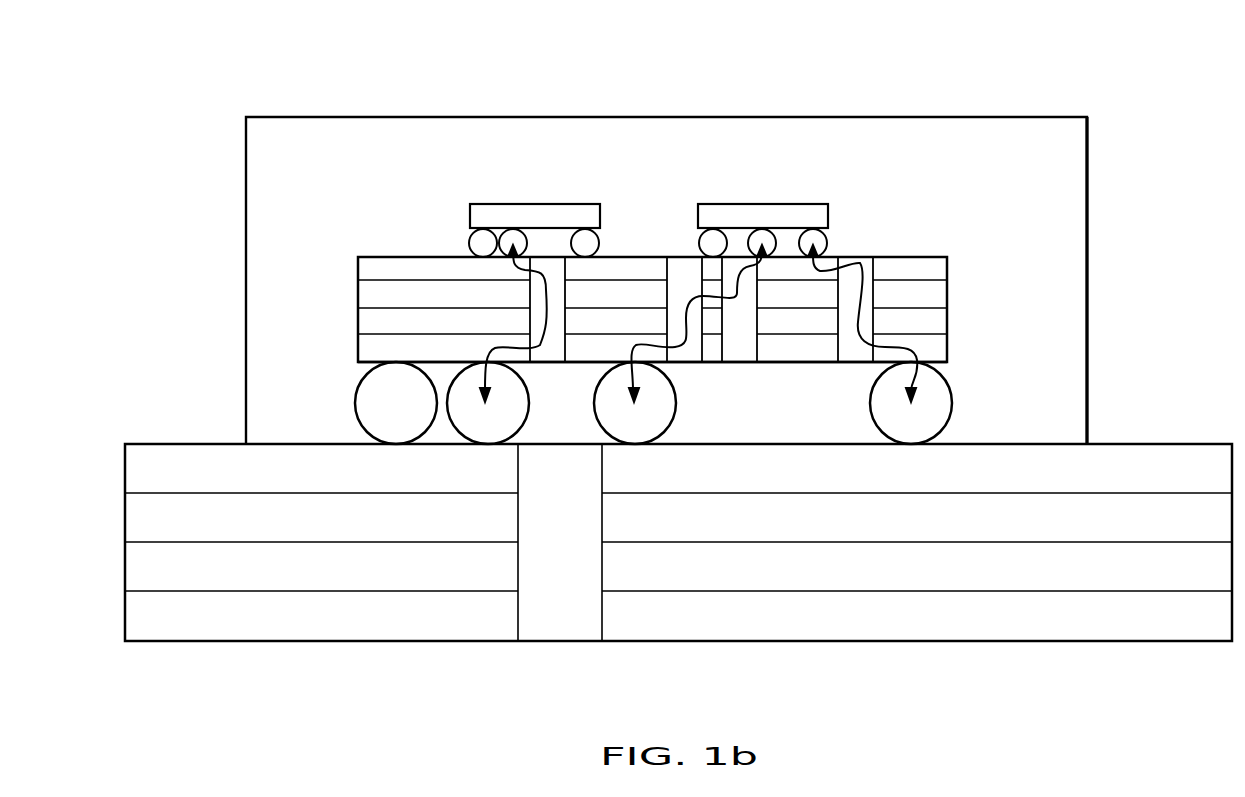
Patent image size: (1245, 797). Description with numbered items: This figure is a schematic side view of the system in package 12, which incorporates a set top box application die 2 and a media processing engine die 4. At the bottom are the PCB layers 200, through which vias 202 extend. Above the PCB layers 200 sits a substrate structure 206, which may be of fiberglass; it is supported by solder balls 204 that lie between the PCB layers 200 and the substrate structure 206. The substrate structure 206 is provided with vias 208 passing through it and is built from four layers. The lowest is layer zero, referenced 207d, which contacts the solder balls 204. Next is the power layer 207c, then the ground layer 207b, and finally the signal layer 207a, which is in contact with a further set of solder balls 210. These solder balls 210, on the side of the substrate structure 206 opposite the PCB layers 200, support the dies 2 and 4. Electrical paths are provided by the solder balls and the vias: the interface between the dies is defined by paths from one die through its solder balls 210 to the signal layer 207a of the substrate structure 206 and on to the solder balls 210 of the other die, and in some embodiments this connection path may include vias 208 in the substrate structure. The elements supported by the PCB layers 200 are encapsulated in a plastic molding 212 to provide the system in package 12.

The system in package 12 is at (283, 117).
The plastic molding 212 is at (1090, 130).
The media processing engine die 4 is at (492, 204).
The set top box application die 2 is at (720, 204).
The solder balls 210 is at (698, 243).
The vias 208 is at (865, 270).
The substrate structure 206 is at (919, 262).
The signal layer 207a is at (948, 267).
The ground layer 207b is at (948, 293).
The power layer 207c is at (948, 320).
The layer 0 207d is at (948, 347).
The solder balls 204 is at (396, 432).
The vias 202 is at (561, 630).
The PCB layers 200 is at (1199, 632).